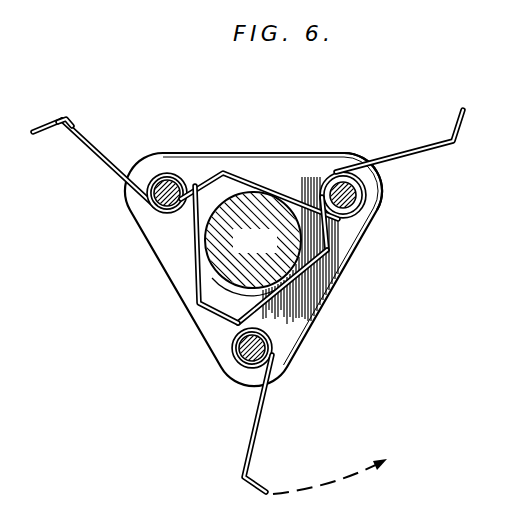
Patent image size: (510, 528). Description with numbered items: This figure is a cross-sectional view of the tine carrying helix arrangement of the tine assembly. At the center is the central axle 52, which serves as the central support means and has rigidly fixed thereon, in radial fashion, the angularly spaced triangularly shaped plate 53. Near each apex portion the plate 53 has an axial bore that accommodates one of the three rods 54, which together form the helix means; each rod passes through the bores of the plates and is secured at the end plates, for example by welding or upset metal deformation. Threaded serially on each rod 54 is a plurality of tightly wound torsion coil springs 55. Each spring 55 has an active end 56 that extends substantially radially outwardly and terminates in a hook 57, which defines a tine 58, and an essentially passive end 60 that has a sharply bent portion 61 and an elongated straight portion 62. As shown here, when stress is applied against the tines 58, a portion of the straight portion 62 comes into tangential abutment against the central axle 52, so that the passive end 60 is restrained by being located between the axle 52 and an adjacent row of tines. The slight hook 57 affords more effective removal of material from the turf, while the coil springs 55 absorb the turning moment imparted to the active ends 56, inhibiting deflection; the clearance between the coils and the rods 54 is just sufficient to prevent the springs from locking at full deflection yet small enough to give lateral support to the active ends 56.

The central axle 52 is at (269, 256).
The triangularly shaped plate 53 is at (275, 158).
The rod 54 is at (366, 190).
The torsion coil spring 55 is at (378, 212).
The active end 56 is at (97, 162).
The hook 57 is at (60, 118).
The tine 58 is at (86, 118).
The passive end 60 is at (309, 285).
The sharply bent portion 61 is at (348, 256).
The elongated straight portion 62 is at (228, 323).